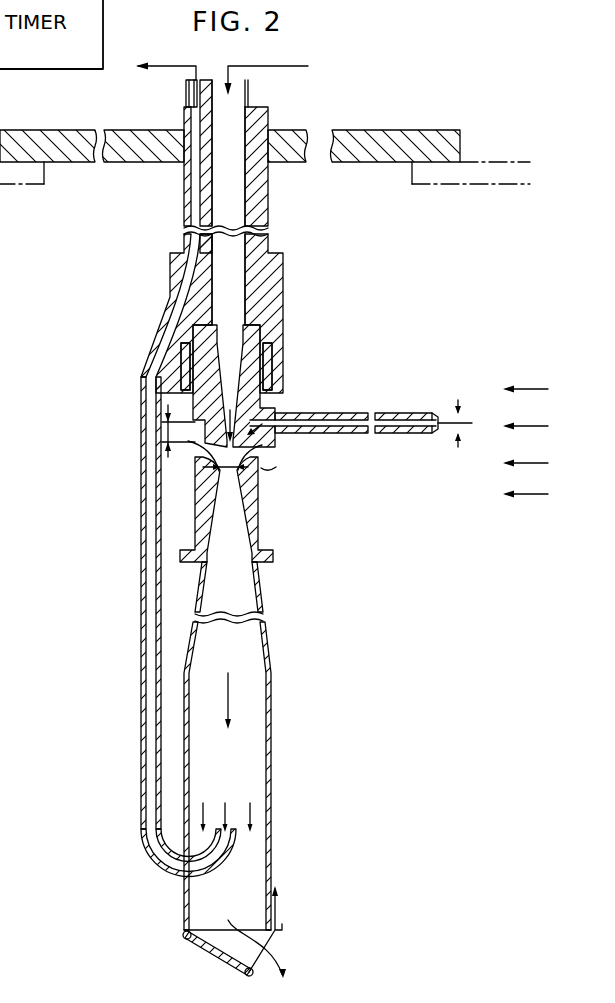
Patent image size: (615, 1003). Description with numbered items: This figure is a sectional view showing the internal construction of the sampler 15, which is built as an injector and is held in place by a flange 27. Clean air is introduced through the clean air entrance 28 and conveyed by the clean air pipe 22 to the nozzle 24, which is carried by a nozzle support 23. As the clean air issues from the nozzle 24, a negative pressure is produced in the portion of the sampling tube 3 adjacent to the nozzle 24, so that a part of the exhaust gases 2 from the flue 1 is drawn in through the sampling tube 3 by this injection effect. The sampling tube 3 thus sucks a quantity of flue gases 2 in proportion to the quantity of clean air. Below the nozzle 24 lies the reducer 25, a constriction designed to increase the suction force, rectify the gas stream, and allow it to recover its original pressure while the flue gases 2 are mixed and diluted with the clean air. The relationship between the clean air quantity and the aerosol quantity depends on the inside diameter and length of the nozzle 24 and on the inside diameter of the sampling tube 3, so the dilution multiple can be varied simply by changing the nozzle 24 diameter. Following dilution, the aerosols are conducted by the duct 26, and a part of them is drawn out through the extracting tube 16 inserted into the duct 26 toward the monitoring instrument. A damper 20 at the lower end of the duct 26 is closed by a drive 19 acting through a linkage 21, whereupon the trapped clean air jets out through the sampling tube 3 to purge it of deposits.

The flue 1 is at (470, 184).
The exhaust gases 2 is at (518, 496).
The sampling tube 3 is at (386, 434).
The sampler 15 is at (336, 380).
The extracting tube 16 is at (140, 555).
The drive 19 is at (302, 873).
The damper 20 is at (210, 952).
The linkage 21 is at (280, 912).
The clean air pipe 22 is at (170, 270).
The nozzle support 23 is at (262, 332).
The nozzle 24 is at (213, 444).
The reducer 25 is at (257, 488).
The duct 26 is at (272, 770).
The flange 27 is at (147, 163).
The clean air entrance 28 is at (235, 130).